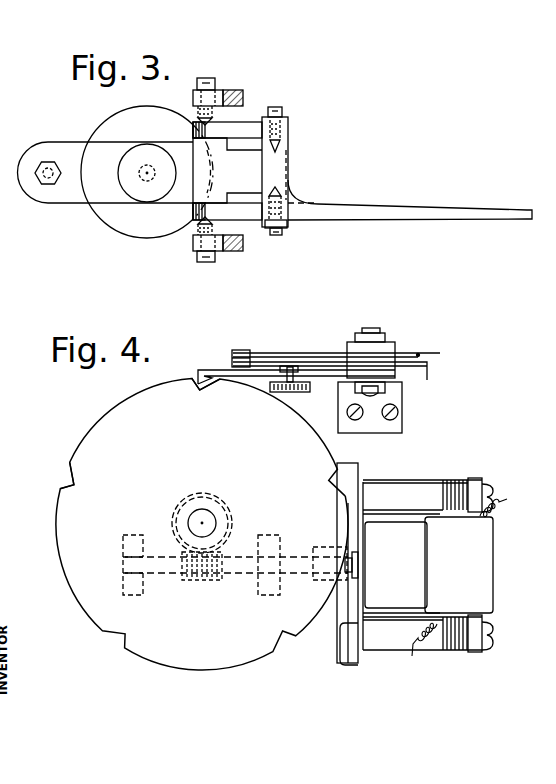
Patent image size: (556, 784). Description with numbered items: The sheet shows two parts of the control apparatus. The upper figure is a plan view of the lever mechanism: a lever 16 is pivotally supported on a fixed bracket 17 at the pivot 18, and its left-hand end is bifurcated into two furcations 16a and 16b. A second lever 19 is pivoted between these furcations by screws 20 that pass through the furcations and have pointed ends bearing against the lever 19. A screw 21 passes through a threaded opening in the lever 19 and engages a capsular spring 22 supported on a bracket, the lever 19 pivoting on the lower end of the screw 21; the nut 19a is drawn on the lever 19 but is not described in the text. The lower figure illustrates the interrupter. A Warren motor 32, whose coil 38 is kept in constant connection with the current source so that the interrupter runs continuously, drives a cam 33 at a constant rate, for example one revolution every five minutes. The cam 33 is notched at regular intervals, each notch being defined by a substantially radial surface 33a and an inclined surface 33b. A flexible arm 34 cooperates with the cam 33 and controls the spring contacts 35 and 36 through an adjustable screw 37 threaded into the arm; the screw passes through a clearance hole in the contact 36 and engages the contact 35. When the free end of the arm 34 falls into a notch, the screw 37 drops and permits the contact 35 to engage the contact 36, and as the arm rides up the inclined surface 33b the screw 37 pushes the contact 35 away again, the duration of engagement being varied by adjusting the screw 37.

In FIG. 3, the lever 16 is at (421, 216).
In FIG. 3, the furcation 16a is at (250, 215).
In FIG. 3, the furcation 16b is at (248, 125).
In FIG. 3, the fixed bracket 17 is at (236, 90).
In FIG. 3, the pivot 18 is at (208, 78).
In FIG. 3, the lever 19 is at (62, 195).
In FIG. 3, the nut 19a is at (48, 160).
In FIG. 3, the screws 20 is at (282, 111).
In FIG. 3, the screw 21 is at (138, 196).
In FIG. 3, the capsular spring 22 is at (118, 228).
In FIG. 4, the Warren motor 32 is at (435, 567).
In FIG. 4, the cam 33 is at (75, 565).
In FIG. 4, the radial surface 33a is at (63, 482).
In FIG. 4, the inclined surface 33b is at (212, 387).
In FIG. 4, the flexible arm 34 is at (212, 370).
In FIG. 4, the spring contact 35 is at (238, 352).
In FIG. 4, the spring contact 36 is at (233, 352).
In FIG. 4, the adjustable screw 37 is at (293, 394).
In FIG. 4, the coil 38 is at (482, 565).